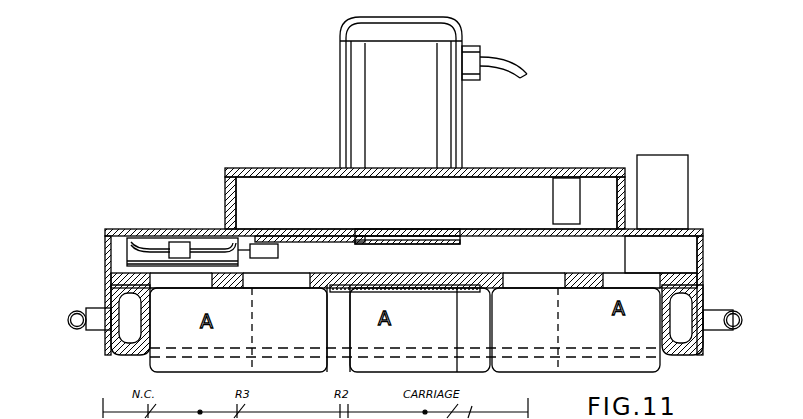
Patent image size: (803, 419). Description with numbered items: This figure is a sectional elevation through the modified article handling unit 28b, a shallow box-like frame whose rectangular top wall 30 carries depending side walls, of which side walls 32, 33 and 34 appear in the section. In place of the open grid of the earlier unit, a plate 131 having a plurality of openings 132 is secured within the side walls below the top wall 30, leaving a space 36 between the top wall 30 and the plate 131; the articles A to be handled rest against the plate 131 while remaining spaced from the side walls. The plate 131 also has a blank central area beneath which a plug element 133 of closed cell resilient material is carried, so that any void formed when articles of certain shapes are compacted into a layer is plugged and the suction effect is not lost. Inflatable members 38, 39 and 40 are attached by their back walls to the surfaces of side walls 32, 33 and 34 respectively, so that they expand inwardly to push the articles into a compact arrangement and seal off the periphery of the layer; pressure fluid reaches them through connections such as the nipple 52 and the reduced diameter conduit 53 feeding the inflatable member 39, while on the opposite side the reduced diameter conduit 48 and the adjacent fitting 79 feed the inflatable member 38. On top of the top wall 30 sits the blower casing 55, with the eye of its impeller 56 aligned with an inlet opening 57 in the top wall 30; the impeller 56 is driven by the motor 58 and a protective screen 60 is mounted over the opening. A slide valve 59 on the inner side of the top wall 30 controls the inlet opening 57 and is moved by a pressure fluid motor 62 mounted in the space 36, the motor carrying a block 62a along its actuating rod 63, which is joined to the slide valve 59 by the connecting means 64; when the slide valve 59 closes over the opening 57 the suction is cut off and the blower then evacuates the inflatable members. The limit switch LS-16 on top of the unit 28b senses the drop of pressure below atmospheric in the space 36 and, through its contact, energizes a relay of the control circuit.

The motor 58 is at (433, 92).
The blower casing 55 is at (505, 168).
The impeller 56 is at (565, 180).
The limit switch LS-16 is at (688, 168).
The modified article handling unit 28b is at (591, 107).
The top wall 30 is at (155, 229).
The pressure fluid motor 62 is at (148, 240).
The cable connector block 62a is at (181, 242).
The actuating rod 63 is at (244, 249).
The connecting means 64 is at (279, 254).
The slide valve 59 is at (332, 242).
The inlet opening 57 is at (427, 236).
The protective screen 60 is at (434, 244).
The space 36 is at (404, 267).
The plate 131 is at (580, 284).
The side wall 33 is at (677, 248).
The side wall 32 is at (705, 256).
The side wall 34 is at (105, 249).
The nipple 52 is at (100, 309).
The reduced diameter conduit 53 is at (68, 320).
The inflatable member 40 is at (122, 352).
The openings 132 is at (270, 290).
The plug element 133 is at (428, 293).
The inflatable member 39 is at (540, 352).
The right shaft 79 is at (712, 311).
The reduced diameter conduit 48 is at (742, 318).
The inflatable member 38 is at (686, 353).